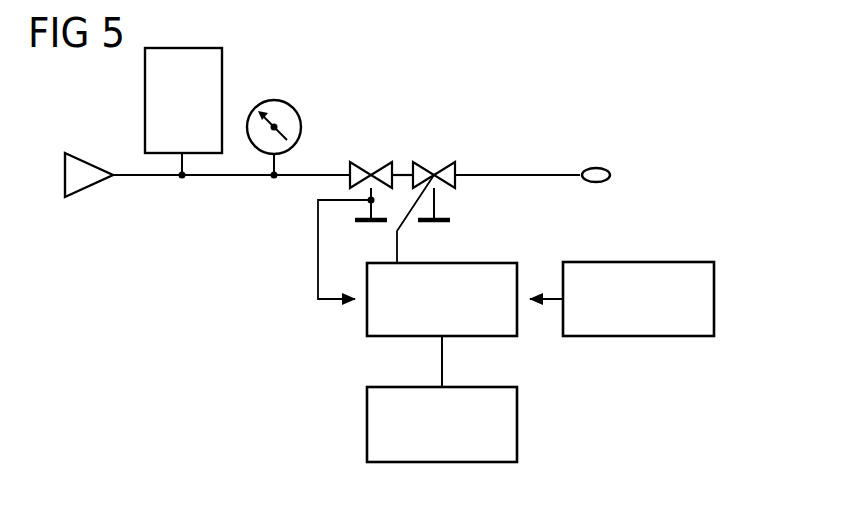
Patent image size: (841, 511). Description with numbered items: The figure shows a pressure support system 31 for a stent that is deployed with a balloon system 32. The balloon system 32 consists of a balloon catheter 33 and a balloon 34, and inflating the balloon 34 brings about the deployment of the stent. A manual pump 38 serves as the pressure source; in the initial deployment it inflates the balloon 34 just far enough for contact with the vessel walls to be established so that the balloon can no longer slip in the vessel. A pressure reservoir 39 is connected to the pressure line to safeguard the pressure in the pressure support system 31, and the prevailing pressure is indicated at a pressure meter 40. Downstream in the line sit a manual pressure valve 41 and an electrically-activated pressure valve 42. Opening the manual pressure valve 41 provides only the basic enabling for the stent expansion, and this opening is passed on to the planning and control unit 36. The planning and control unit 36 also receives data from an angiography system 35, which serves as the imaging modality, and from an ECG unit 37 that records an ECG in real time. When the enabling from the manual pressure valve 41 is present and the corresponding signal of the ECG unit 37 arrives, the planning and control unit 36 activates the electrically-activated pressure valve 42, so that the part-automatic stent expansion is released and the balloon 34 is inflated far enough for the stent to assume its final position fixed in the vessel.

The pressure support system 31 is at (256, 300).
The balloon system 32 is at (550, 166).
The balloon catheter 33 is at (497, 173).
The balloon 34 is at (594, 167).
The angiography system 35 is at (367, 428).
The planning and control unit 36 is at (367, 318).
The ECG unit 37 is at (665, 262).
The manual pump 38 is at (93, 160).
The pressure reservoir 39 is at (222, 60).
The pressure meter 40 is at (295, 110).
The manual pressure valve 41 is at (373, 172).
The electrically-activated pressure valve 42 is at (436, 172).